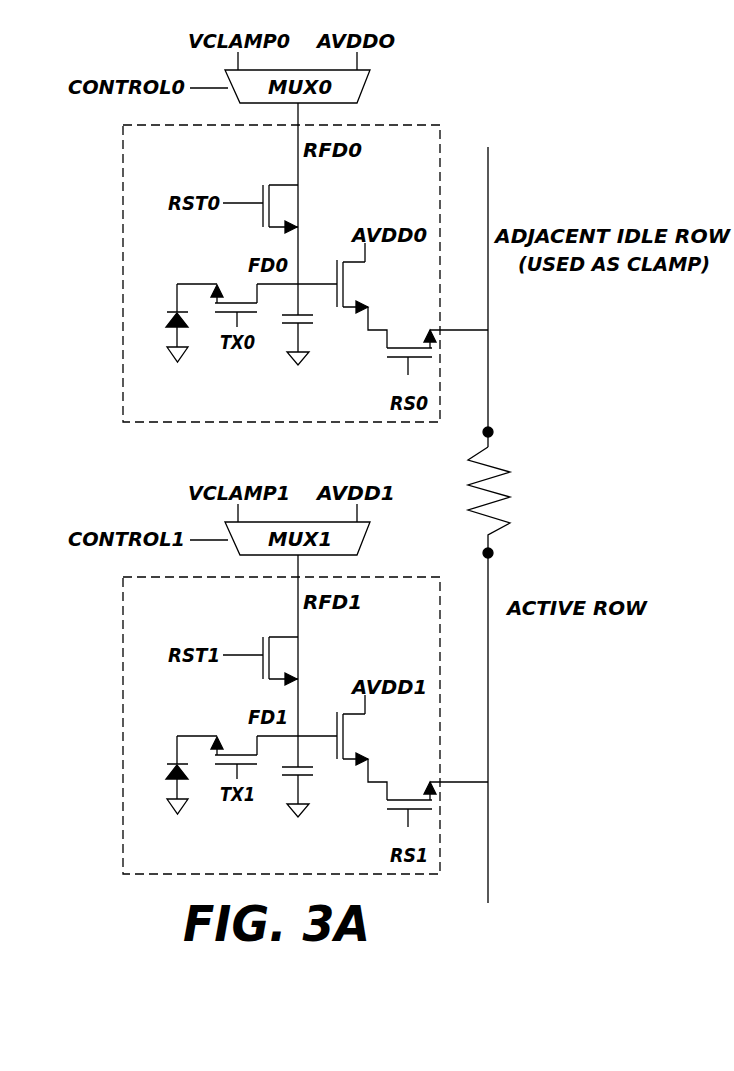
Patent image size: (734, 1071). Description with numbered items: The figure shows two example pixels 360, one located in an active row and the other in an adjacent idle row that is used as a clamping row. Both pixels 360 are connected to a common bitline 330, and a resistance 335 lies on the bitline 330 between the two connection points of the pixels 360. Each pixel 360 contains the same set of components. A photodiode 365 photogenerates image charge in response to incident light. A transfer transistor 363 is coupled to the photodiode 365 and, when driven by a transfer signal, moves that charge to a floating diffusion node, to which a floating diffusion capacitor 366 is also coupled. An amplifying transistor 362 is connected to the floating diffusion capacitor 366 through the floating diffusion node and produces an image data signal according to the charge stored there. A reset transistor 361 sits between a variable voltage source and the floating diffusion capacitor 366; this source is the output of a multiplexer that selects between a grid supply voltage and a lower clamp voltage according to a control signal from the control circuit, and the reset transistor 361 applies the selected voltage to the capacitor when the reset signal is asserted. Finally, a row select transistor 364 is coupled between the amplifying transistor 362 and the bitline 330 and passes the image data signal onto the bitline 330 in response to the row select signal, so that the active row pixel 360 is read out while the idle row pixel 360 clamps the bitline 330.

The bitline 330 is at (498, 842).
The resistance 335 is at (510, 490).
The pixel 360 is at (123, 279).
The reset transistor 361 is at (264, 185).
The amplifying transistor 362 is at (338, 262).
The transfer transistor 363 is at (233, 288).
The row select transistor 364 is at (398, 362).
The photodiode 365 is at (177, 336).
The floating diffusion capacitor 366 is at (313, 324).